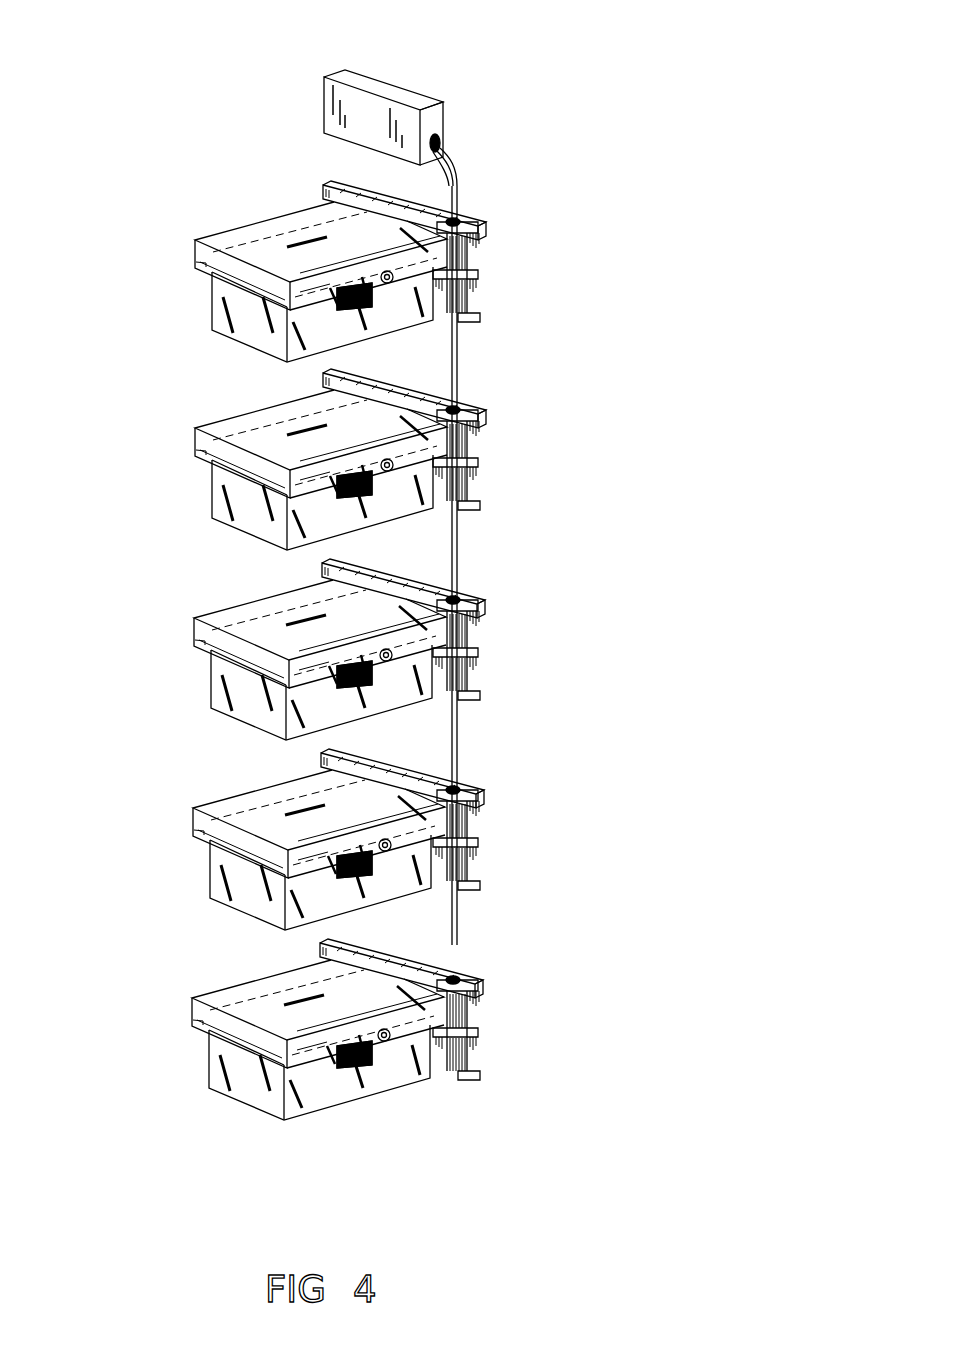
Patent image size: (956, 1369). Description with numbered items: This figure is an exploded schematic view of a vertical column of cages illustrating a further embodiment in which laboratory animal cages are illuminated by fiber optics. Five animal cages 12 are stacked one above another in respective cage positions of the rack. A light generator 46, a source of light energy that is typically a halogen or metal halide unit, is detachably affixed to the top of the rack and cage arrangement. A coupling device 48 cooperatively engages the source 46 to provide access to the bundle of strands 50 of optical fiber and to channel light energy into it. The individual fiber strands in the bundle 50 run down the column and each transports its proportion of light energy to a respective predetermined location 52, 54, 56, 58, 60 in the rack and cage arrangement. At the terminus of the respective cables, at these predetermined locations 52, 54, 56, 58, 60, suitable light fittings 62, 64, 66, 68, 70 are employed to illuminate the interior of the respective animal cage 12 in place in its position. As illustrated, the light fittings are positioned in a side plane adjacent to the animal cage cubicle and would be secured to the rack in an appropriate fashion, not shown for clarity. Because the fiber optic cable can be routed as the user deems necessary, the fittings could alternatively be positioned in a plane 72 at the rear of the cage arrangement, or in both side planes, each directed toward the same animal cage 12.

The animal cage 12 is at (210, 328).
The light generator 46 is at (412, 93).
The coupling device 48 is at (442, 137).
The bundle of strands of optical fiber 50 is at (453, 180).
The predetermined location 52 is at (371, 306).
The predetermined location 54 is at (371, 495).
The predetermined location 56 is at (371, 684).
The predetermined location 58 is at (371, 873).
The predetermined location 60 is at (371, 1062).
The light fitting 62 is at (337, 310).
The light fitting 64 is at (337, 498).
The light fitting 66 is at (337, 688).
The light fitting 68 is at (337, 878).
The light fitting 70 is at (337, 1068).
The plane at the rear of the cage arrangement 72 is at (497, 398).